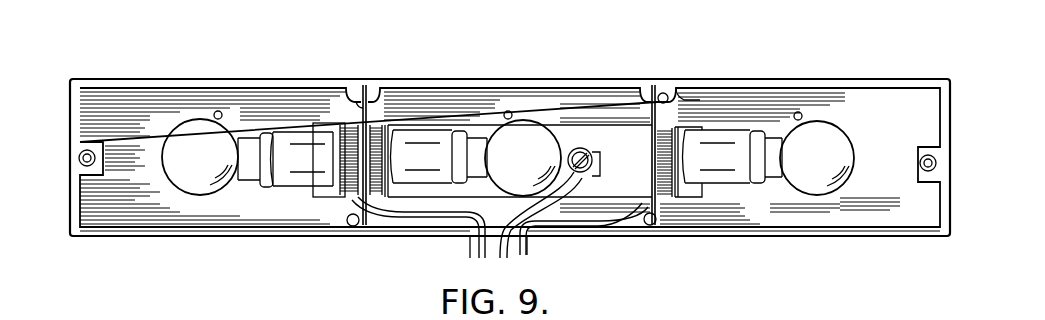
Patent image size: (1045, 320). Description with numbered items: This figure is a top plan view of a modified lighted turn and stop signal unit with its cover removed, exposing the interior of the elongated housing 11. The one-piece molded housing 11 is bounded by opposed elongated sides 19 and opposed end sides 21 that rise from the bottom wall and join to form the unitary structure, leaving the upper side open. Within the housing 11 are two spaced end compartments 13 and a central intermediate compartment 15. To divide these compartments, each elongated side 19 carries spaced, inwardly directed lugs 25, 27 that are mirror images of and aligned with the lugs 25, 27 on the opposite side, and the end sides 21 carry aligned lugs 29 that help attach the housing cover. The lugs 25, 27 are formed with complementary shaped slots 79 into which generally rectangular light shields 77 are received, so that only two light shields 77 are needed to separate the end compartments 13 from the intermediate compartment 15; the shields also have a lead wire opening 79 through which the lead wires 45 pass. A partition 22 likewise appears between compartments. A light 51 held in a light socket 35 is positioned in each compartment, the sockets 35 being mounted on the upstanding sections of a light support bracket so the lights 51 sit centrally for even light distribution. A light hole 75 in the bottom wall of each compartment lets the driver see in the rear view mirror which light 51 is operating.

The elongated housing 11 is at (952, 83).
The end compartment 13 is at (258, 113).
The intermediate compartment 15 is at (589, 120).
The elongated side 19 is at (122, 80).
The end side 21 is at (72, 98).
The right partition wall 22 is at (655, 228).
The inwardly directed lug 25 is at (367, 90).
The inwardly directed lug 27 is at (673, 98).
The lug 29 is at (79, 153).
The light socket 35 is at (308, 164).
The lead wire 45 is at (477, 255).
The light 51 is at (196, 168).
The light hole 75 is at (220, 112).
The light shield 77 is at (370, 119).
The slot 79 is at (361, 102).